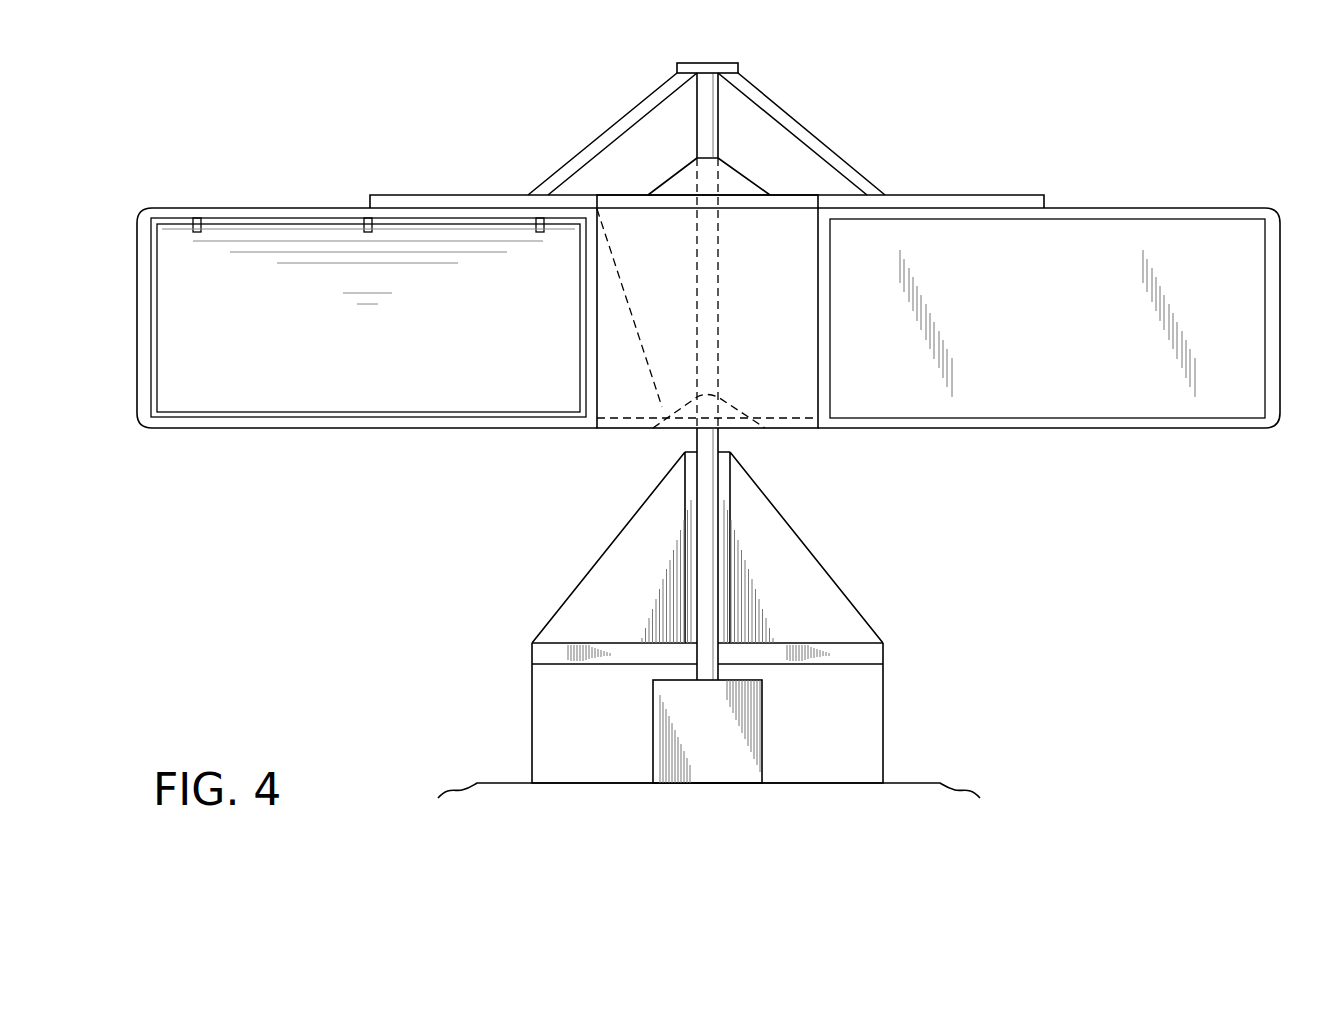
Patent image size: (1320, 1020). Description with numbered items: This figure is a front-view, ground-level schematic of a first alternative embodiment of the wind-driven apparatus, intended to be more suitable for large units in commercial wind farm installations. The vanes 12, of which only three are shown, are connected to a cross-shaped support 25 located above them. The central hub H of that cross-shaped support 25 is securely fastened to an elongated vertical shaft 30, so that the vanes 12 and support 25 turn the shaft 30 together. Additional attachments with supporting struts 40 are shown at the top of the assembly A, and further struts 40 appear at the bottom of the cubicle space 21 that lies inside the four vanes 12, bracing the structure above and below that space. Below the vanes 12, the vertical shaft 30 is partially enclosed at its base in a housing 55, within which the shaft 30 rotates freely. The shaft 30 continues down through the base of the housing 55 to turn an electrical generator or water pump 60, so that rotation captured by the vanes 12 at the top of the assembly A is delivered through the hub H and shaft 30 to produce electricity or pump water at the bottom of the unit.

The vane 12 is at (202, 208).
The cubicle space 21 is at (743, 415).
The cross-shaped support 25 is at (953, 195).
The vertical shaft 30 is at (720, 435).
The supporting strut 40 is at (813, 148).
The housing 55 is at (605, 575).
The electrical generator or water pump 60 is at (762, 732).
The assembly A is at (490, 153).
The central hub H is at (787, 70).